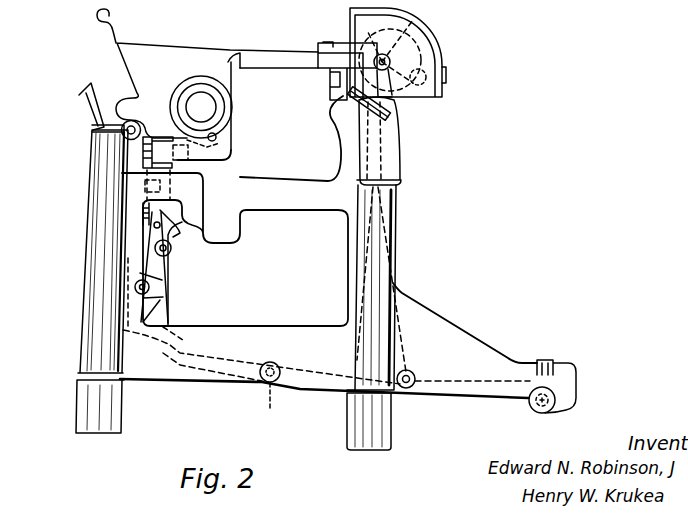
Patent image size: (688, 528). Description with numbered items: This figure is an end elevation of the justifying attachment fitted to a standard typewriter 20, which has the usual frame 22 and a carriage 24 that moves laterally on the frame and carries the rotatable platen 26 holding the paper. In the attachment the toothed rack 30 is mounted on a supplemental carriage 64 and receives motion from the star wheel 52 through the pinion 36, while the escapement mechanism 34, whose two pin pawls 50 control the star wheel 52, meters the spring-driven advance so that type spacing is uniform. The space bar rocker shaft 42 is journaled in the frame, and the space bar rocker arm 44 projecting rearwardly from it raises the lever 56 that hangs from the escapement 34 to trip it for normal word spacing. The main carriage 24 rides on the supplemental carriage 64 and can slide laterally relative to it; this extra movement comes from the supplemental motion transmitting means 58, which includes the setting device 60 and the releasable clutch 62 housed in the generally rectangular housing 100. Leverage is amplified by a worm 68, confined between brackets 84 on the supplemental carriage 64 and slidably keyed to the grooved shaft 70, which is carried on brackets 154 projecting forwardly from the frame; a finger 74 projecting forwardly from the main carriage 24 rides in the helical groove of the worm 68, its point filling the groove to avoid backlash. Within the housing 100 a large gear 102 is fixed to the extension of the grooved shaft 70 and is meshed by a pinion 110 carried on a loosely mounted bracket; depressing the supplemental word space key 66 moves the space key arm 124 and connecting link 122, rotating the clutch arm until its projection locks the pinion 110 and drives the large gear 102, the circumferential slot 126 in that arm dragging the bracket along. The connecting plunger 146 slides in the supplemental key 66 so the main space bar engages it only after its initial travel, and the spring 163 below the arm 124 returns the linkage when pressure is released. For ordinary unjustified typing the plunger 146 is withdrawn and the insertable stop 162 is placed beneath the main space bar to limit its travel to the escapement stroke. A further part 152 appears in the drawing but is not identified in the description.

The typewriter 20 is at (403, 190).
The typewriter frame 22 is at (91, 184).
The carriage 24 is at (195, 45).
The platen 26 is at (188, 78).
The toothed rack 30 is at (162, 155).
The escapement mechanism 34 is at (161, 281).
The pinion 36 is at (190, 160).
The space bar rocker shaft 42 is at (268, 398).
The space bar rocker arm 44 is at (212, 358).
The pin pawls 50 is at (164, 203).
The star wheel 52 is at (142, 222).
The lever 56 is at (163, 330).
The supplemental motion transmitting means 58 is at (416, 377).
The setting device 60 is at (444, 42).
The releasable clutch 62 is at (448, 68).
The supplemental carriage 64 is at (287, 50).
The supplemental word space key 66 is at (550, 360).
The worm 68 is at (388, 55).
The grooved shaft 70 is at (391, 72).
The finger 74 is at (336, 43).
The brackets 84 is at (343, 18).
The housing 100 is at (425, 92).
The large gear 102 is at (430, 23).
The pinion 110 is at (448, 82).
The connecting link 122 is at (358, 124).
The space key arm 124 is at (483, 399).
The circumferential slot 126 is at (382, 53).
The connecting plunger 146 is at (517, 0).
The pin 152 is at (217, 136).
The brackets 154 is at (400, 113).
The insertable stop 162 is at (557, 395).
The spring 163 is at (343, 396).